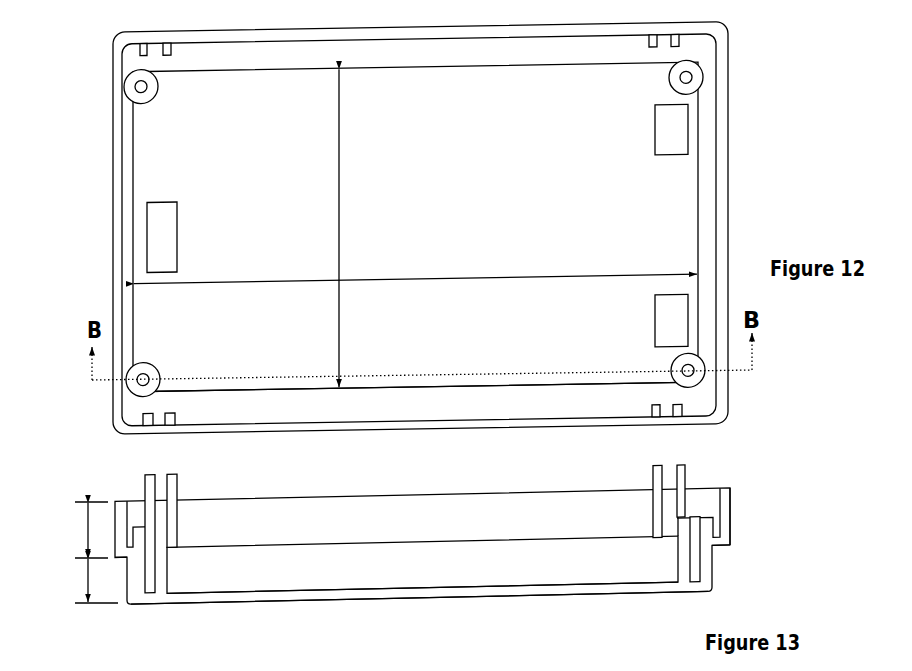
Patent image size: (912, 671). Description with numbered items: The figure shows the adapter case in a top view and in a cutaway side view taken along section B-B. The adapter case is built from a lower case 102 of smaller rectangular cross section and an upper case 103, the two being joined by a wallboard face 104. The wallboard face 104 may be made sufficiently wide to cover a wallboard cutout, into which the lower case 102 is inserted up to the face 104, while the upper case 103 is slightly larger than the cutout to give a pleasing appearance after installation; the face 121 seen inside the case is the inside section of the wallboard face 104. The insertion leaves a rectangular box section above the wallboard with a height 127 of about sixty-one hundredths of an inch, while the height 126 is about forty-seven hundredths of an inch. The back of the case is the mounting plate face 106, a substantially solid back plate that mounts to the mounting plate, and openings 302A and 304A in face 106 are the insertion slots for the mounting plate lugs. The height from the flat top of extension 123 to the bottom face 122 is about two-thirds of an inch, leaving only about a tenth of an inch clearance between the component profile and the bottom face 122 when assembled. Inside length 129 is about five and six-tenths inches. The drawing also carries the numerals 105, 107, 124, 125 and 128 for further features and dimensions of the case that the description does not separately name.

In FIG. 13, the lower case 102 is at (715, 580).
In FIG. 13, the upper case 103 is at (733, 520).
In FIG. 13, the wallboard face 104 is at (722, 565).
In FIG. 13, the housing base 105 is at (403, 495).
In FIG. 13, the mounting plate face 106 is at (273, 603).
In FIG. 12, the retaining tabs 107 is at (147, 425).
In FIG. 13, the retaining tabs 107 is at (710, 460).
In FIG. 12, the face 121 is at (355, 405).
In FIG. 13, the face 121 is at (368, 540).
In FIG. 12, the bottom face 122 is at (255, 362).
In FIG. 13, the bottom face 122 is at (273, 588).
In FIG. 12, the extension 123 is at (132, 390).
In FIG. 13, the extension 123 is at (92, 473).
In FIG. 12, the outer wall 124 is at (715, 220).
In FIG. 12, the inner wall 125 is at (126, 193).
In FIG. 13, the height 126 is at (79, 581).
In FIG. 13, the height 127 is at (74, 530).
In FIG. 12, the panel length 128 is at (359, 228).
In FIG. 12, the inside length 129 is at (415, 292).
In FIG. 12, the opening 302A is at (173, 220).
In FIG. 12, the opening 304A is at (665, 143).